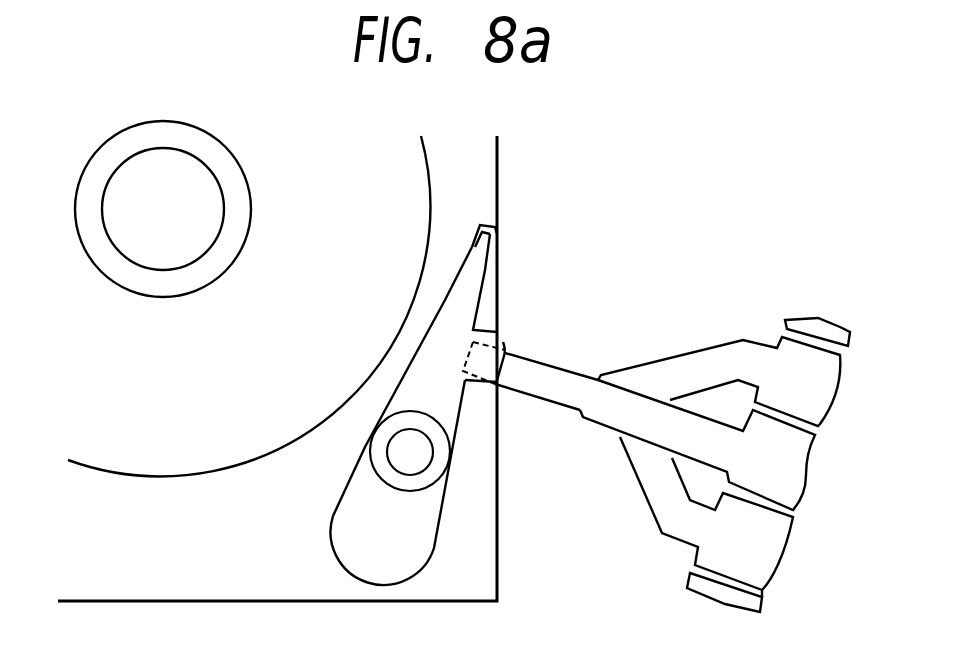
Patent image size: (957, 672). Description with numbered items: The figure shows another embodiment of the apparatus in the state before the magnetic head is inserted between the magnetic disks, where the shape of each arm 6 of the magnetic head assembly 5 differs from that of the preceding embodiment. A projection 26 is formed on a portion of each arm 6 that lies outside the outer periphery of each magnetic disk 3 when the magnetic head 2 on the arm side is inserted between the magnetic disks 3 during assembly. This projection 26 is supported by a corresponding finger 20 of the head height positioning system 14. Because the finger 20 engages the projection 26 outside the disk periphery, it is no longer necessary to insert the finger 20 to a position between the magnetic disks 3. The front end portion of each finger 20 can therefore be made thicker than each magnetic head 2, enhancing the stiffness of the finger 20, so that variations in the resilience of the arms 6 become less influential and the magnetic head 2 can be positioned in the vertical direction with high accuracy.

The magnetic disk 3 is at (428, 153).
The magnetic head 2 is at (499, 225).
The arm 6 is at (467, 292).
The magnetic head assembly 5 is at (443, 504).
The projection 26 is at (505, 346).
The finger 20 is at (565, 392).
The head height positioning system 14 is at (783, 331).